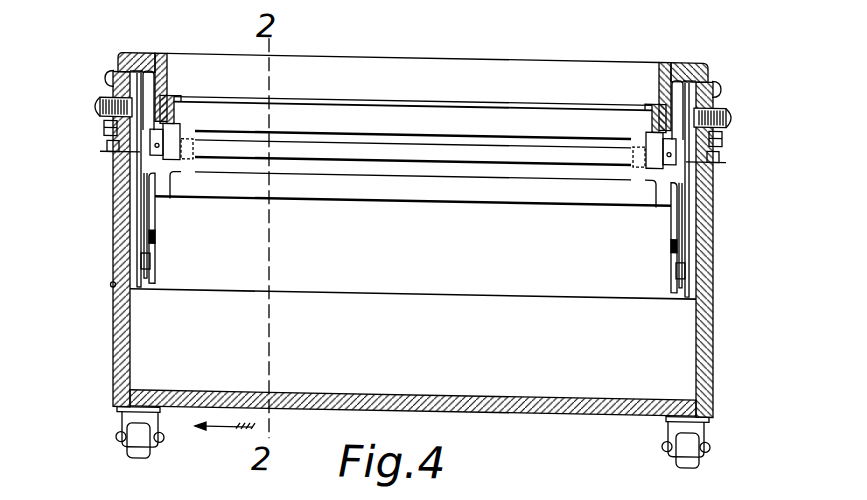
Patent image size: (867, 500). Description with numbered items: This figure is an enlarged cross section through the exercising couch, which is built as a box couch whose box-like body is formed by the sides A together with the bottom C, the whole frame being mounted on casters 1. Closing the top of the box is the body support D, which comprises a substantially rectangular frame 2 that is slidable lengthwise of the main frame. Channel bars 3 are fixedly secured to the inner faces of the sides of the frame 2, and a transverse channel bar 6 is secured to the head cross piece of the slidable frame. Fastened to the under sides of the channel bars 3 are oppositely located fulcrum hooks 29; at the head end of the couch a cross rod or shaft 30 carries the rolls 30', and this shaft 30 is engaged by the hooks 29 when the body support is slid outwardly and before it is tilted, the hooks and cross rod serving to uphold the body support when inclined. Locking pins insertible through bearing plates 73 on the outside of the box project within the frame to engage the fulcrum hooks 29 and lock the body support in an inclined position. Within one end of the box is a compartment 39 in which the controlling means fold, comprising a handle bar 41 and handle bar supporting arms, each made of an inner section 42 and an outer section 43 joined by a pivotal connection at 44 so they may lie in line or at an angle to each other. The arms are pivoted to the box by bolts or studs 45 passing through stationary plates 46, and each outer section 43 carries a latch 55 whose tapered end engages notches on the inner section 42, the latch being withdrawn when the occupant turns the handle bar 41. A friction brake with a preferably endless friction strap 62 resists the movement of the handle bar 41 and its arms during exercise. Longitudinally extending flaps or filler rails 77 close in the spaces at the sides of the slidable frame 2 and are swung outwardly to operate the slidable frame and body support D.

The casters 1 is at (137, 452).
The rectangular frame 2 is at (167, 80).
The channel bars 3 is at (178, 101).
The transverse channel bar 6 is at (302, 104).
The fulcrum hooks 29 is at (188, 166).
The cross rod or shaft 30 is at (413, 140).
The rolls 30' is at (413, 169).
The compartment 39 is at (413, 308).
The handle bar 41 is at (548, 197).
The inner section 42 is at (137, 207).
The outer section 43 is at (152, 241).
The jointed or pivotal connection 44 is at (149, 270).
The bolts or studs 45 is at (96, 107).
The stationary plates 46 is at (108, 80).
The latch 55 is at (146, 217).
The friction strap 62 is at (150, 131).
The bearing plates 73 is at (108, 133).
The flaps or filler rails 77 is at (139, 58).
The sides A is at (113, 244).
The bottom C is at (112, 293).
The body support D is at (413, 76).